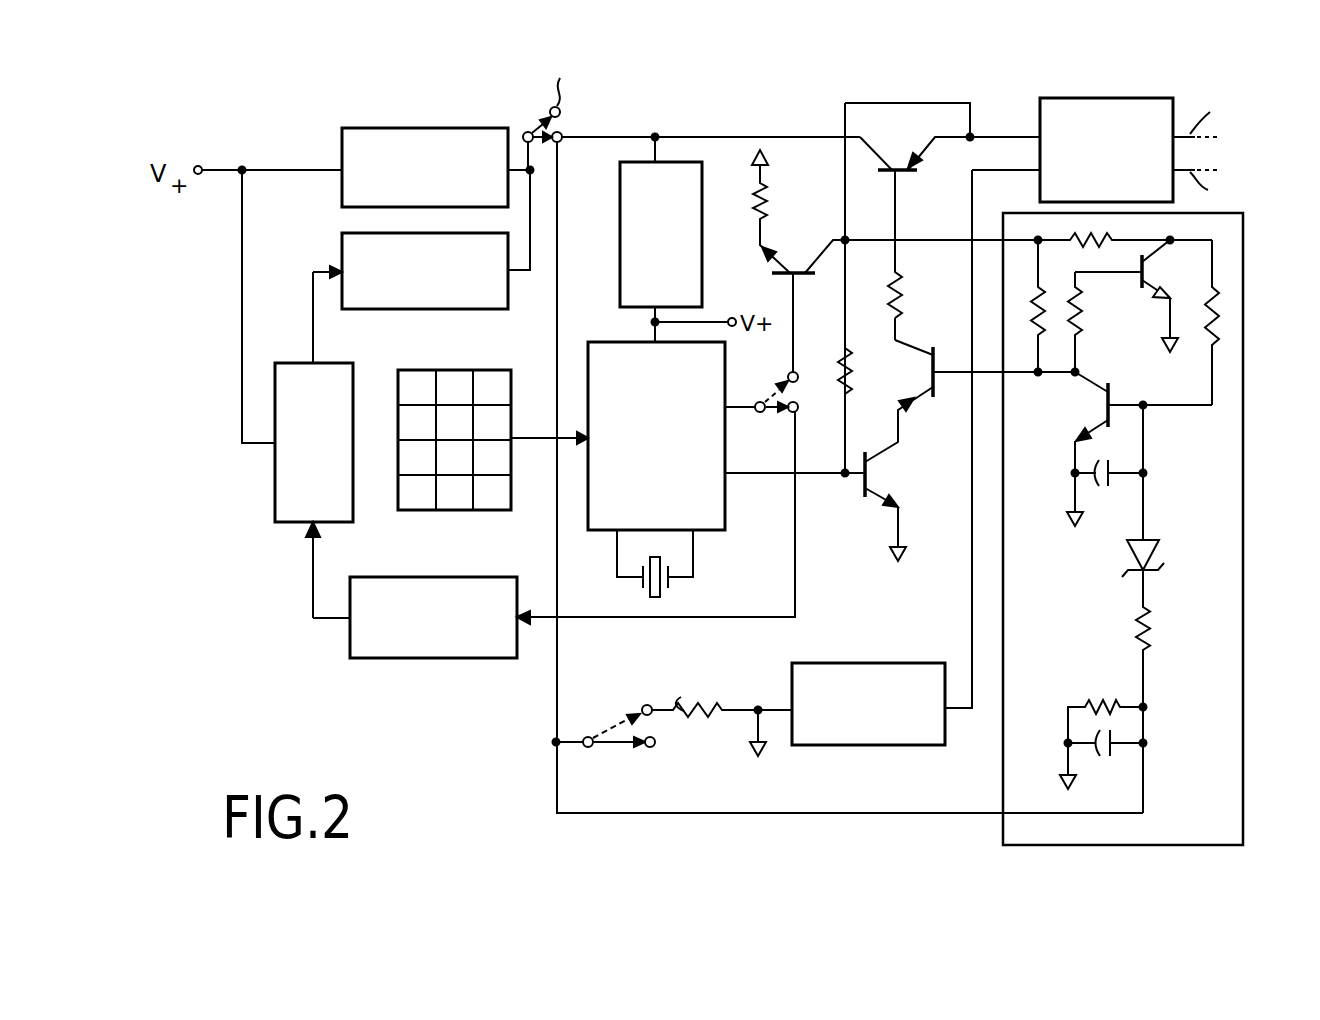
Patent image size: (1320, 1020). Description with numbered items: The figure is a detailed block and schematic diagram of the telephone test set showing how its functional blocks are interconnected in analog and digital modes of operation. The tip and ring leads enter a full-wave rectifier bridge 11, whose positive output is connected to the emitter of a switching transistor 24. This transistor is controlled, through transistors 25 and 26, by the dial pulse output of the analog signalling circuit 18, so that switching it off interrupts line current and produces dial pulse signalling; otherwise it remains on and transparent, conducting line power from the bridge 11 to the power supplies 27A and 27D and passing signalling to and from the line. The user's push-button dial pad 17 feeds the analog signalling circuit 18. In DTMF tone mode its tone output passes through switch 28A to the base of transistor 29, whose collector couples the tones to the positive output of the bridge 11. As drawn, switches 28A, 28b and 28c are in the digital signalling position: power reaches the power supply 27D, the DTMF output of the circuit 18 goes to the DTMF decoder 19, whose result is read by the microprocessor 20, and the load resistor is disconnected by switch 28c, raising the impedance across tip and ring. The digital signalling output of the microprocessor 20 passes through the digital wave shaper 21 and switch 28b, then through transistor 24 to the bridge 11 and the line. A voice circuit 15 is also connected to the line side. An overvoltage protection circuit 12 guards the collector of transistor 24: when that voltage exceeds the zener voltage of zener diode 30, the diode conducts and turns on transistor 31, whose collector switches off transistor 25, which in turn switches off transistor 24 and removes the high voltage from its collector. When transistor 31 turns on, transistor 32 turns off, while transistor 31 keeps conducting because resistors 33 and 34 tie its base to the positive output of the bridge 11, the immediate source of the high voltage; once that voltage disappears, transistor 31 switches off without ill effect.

The full-wave bridge rectifier 11 is at (1068, 100).
The overvoltage protection circuit 12 is at (1245, 650).
The voice circuit 15 is at (923, 664).
The push-button dial pad 17 is at (468, 510).
The analog signalling circuit 18 is at (628, 342).
The DTMF tone decoder 19 is at (432, 660).
The microprocessor 20 is at (285, 363).
The digital wave shaper 21 is at (342, 238).
The switching transistor 24 is at (893, 167).
The transistor 25 is at (947, 345).
The transistor 26 is at (862, 497).
The power supply 27A is at (632, 160).
The power supply 27D is at (353, 128).
The switch 28A is at (763, 413).
The switch 28b is at (540, 126).
The switch 28c is at (617, 743).
The transistor 29 is at (793, 268).
The zener diode 30 is at (1127, 548).
The transistor 31 is at (1112, 392).
The transistor 32 is at (1140, 275).
The resistor 33 is at (1218, 322).
The resistor 34 is at (1068, 236).